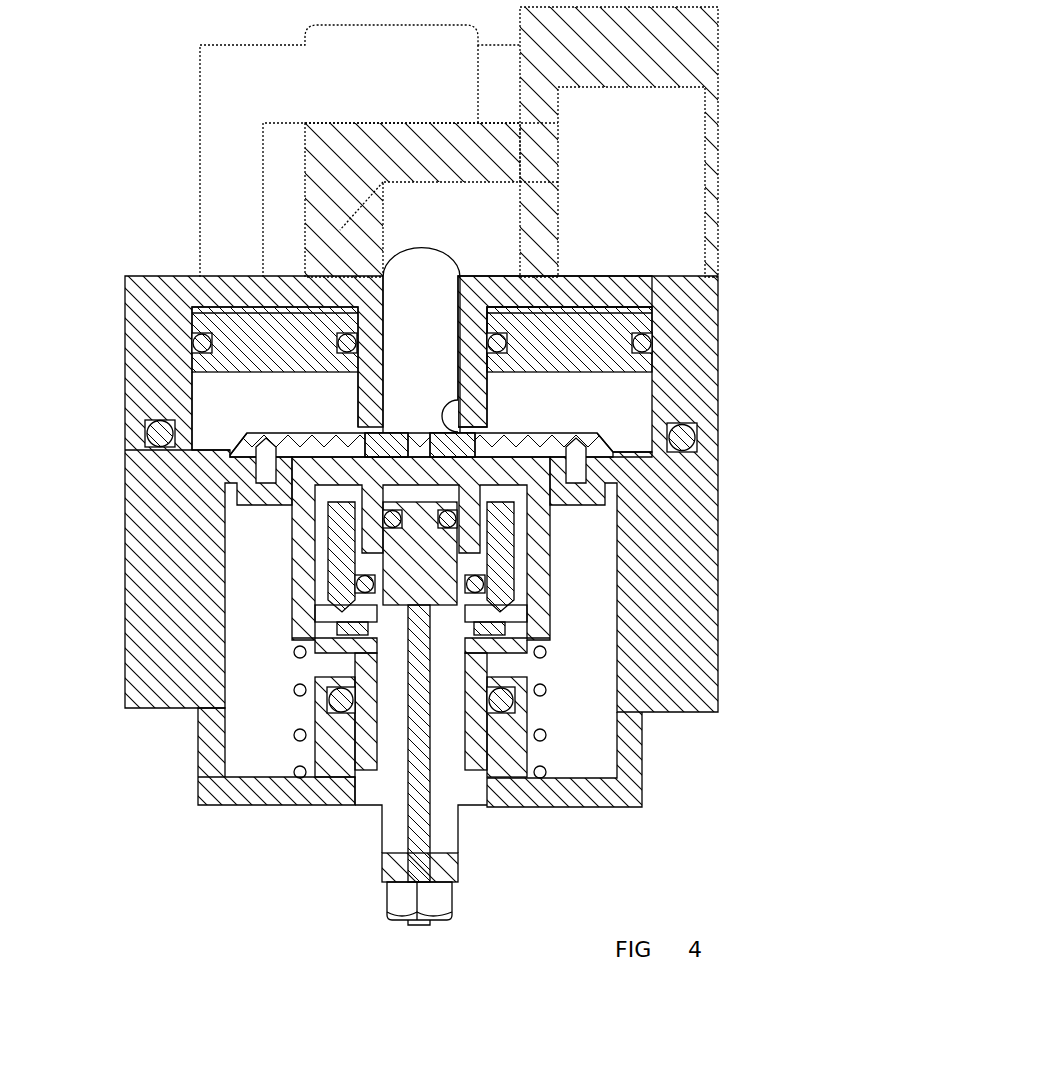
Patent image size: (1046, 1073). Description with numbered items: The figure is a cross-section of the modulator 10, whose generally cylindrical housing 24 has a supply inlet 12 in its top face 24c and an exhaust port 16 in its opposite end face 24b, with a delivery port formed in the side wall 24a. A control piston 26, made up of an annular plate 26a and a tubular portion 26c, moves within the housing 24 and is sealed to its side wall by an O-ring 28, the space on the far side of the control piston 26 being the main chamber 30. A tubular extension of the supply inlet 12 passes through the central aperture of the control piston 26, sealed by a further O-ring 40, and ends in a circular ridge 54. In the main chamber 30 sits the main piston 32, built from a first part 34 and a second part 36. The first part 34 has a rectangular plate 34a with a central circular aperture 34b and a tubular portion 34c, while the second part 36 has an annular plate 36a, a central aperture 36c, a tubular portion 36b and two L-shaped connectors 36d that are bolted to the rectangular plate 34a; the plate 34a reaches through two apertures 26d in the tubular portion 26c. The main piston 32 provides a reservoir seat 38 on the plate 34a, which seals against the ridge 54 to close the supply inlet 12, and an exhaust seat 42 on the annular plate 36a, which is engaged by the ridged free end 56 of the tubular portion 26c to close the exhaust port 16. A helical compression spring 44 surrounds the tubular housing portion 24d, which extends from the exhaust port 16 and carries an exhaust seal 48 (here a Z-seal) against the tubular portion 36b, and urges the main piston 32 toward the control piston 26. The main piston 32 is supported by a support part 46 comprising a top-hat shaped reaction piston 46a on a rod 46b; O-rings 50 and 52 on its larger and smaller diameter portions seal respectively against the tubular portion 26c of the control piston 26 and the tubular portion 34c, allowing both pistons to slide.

The modulator 10 is at (722, 310).
The supply inlet 12 is at (425, 252).
The exhaust port 16 is at (452, 793).
The housing 24 is at (723, 580).
The side wall 24a is at (215, 575).
The end face 24b is at (258, 793).
The top face 24c is at (593, 292).
The tubular housing portion 24d is at (213, 745).
The control piston 26 is at (226, 298).
The annular plate 26a is at (462, 415).
The tubular portion 26c is at (488, 582).
The apertures 26d is at (320, 443).
The O-ring 28 is at (635, 305).
The main chamber 30 is at (592, 618).
The main piston 32 is at (573, 538).
The first part 34 is at (293, 433).
The rectangular plate 34a is at (238, 450).
The circular aperture 34b is at (262, 482).
The tubular portion 34c is at (605, 445).
The second part 36 is at (290, 597).
The annular plate 36a is at (330, 750).
The tubular portion 36b is at (390, 717).
The central aperture 36c is at (510, 720).
The L-shaped connectors 36d is at (328, 540).
The reservoir seat 38 is at (470, 425).
The O-ring 40 is at (345, 343).
The exhaust seat 42 is at (547, 654).
The helical compression spring 44 is at (547, 736).
The support part 46 is at (433, 760).
The reaction piston 46a is at (335, 640).
The rod 46b is at (423, 823).
The exhaust seal 48 is at (516, 702).
The O-ring 50 is at (863, 577).
The O-ring 52 is at (860, 507).
The ridge 54 is at (835, 392).
The free end 56 is at (857, 664).